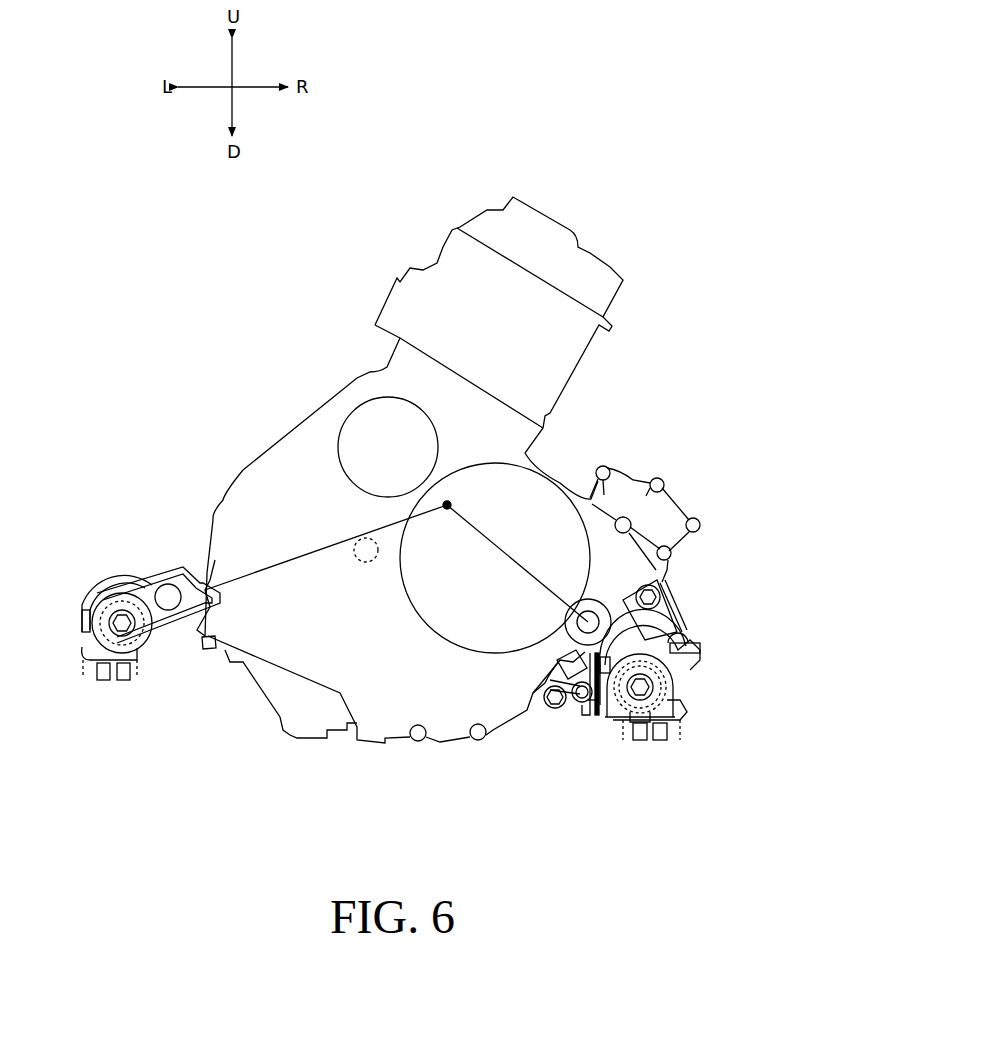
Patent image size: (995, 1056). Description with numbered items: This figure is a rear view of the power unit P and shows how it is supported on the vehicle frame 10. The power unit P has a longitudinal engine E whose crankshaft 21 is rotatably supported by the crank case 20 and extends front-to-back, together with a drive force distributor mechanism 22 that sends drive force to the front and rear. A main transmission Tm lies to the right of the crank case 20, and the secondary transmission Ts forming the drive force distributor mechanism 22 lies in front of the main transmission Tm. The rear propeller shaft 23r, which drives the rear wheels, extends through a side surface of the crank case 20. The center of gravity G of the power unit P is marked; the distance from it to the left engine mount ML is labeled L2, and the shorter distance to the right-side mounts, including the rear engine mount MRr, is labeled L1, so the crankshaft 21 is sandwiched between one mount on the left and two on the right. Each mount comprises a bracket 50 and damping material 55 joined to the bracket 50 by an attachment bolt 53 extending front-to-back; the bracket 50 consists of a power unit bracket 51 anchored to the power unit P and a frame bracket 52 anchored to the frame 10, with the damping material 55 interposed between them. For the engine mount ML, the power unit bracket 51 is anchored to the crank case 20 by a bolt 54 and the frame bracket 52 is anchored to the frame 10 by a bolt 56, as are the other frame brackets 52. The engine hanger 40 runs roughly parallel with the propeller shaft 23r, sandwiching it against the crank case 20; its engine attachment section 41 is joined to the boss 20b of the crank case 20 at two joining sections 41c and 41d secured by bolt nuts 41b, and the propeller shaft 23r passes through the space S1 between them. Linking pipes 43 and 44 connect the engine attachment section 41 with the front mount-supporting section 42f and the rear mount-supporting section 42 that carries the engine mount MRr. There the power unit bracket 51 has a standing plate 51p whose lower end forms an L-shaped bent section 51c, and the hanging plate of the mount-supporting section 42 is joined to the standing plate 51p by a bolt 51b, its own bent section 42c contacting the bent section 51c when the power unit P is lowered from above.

The vehicle frame 10 is at (82, 675).
The crank case 20 is at (285, 648).
The boss 20b is at (672, 598).
The crankshaft 21 is at (360, 562).
The drive force distributor mechanism 22 is at (629, 465).
The secondary transmission Ts is at (603, 523).
The rear propeller shaft 23r is at (592, 647).
The engine hanger 40 is at (675, 602).
The engine attachment section 41 is at (553, 702).
The bolt nuts 41b is at (610, 621).
The joining section 41c is at (665, 596).
The joining section 41d is at (545, 706).
The mount-supporting section 42 is at (597, 712).
The bent section 42c is at (591, 702).
The front mount-supporting section 42f is at (710, 647).
The linking pipe 43 is at (683, 637).
The linking pipe 44 is at (578, 702).
The bracket 50 is at (78, 605).
The power unit bracket 51 is at (122, 575).
The bolt 51b is at (556, 634).
The bent section 51c is at (603, 712).
The standing plate 51p is at (643, 702).
The frame bracket 52 is at (122, 660).
The attachment bolt 53 is at (118, 616).
The bolt 54 is at (205, 580).
The damping material 55 is at (128, 605).
The bolt 56 is at (103, 690).
The engine E is at (353, 270).
The power unit P is at (675, 232).
The center of gravity G is at (455, 494).
The distance L1 is at (517, 563).
The distance L2 is at (326, 547).
The space S1 is at (607, 598).
The main transmission Tm is at (555, 473).
The engine mount ML is at (70, 580).
The engine mount MRr is at (730, 689).